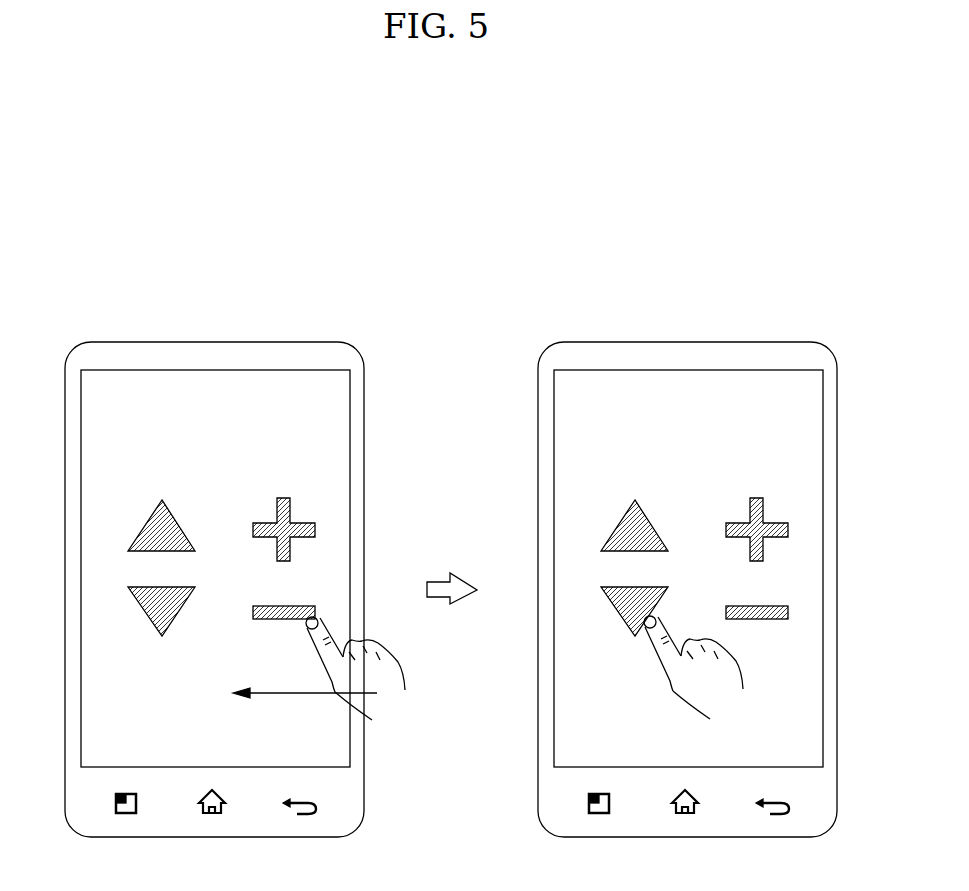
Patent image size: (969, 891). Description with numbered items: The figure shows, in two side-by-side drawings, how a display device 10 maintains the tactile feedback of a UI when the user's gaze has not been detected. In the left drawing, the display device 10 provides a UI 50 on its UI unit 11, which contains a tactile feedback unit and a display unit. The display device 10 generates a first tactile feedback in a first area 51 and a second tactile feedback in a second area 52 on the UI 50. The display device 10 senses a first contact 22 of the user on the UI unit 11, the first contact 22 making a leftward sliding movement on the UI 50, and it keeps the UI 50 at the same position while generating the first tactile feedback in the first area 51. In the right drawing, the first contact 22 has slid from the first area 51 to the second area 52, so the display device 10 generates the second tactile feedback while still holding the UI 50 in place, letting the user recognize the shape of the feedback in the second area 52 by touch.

The display device 10 is at (364, 458).
The UI unit 11 is at (350, 423).
The UI 50 is at (328, 394).
The first area 51 is at (302, 607).
The second area 52 is at (153, 605).
The first contact 22 is at (390, 665).